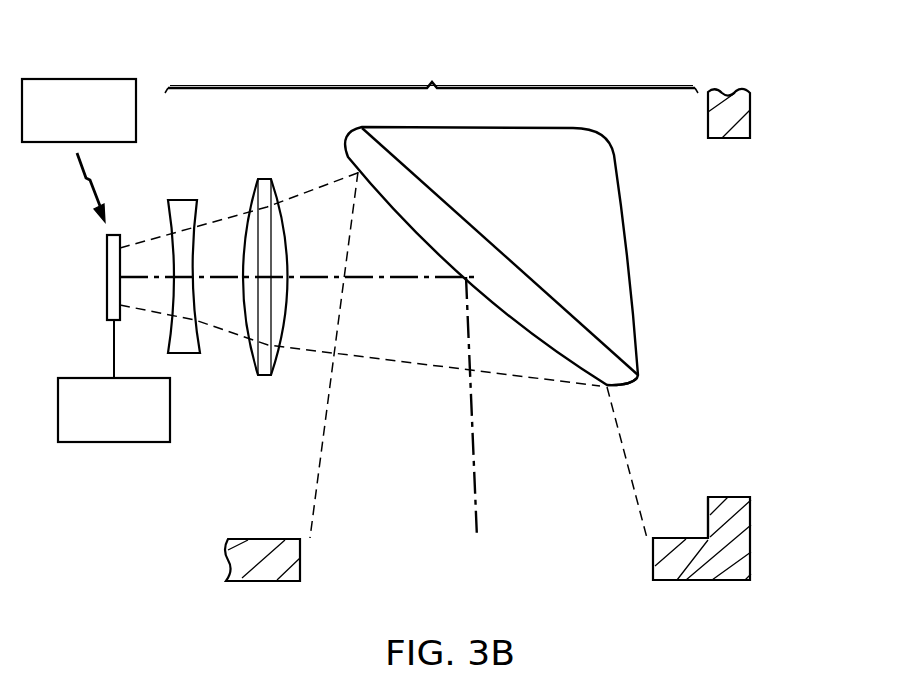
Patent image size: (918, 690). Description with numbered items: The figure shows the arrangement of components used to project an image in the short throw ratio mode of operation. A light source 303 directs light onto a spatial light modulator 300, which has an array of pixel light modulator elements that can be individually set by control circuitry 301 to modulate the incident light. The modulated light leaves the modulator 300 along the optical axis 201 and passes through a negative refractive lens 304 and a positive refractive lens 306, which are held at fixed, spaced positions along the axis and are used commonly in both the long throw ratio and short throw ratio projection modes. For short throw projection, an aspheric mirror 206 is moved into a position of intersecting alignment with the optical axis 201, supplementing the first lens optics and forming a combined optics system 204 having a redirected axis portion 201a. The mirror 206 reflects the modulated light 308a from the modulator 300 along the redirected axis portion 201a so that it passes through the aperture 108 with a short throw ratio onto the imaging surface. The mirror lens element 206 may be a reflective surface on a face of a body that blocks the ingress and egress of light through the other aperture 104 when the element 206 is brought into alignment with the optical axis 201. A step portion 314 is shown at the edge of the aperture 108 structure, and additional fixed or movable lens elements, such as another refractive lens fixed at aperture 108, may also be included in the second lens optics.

The light source 303 is at (77, 79).
The spatial light modulator 300 is at (107, 262).
The control circuitry 301 is at (98, 443).
The negative refractive lens 304 is at (180, 200).
The positive refractive lens 306 is at (263, 377).
The optical axis 201 is at (388, 279).
The redirected axis portion 201a is at (474, 487).
The combined optics system 204 is at (431, 218).
The aspheric mirror 206 is at (630, 378).
The modulated light 308a is at (320, 462).
The aperture 104 is at (728, 138).
The aperture 108 is at (653, 553).
The step portion 314 is at (708, 517).